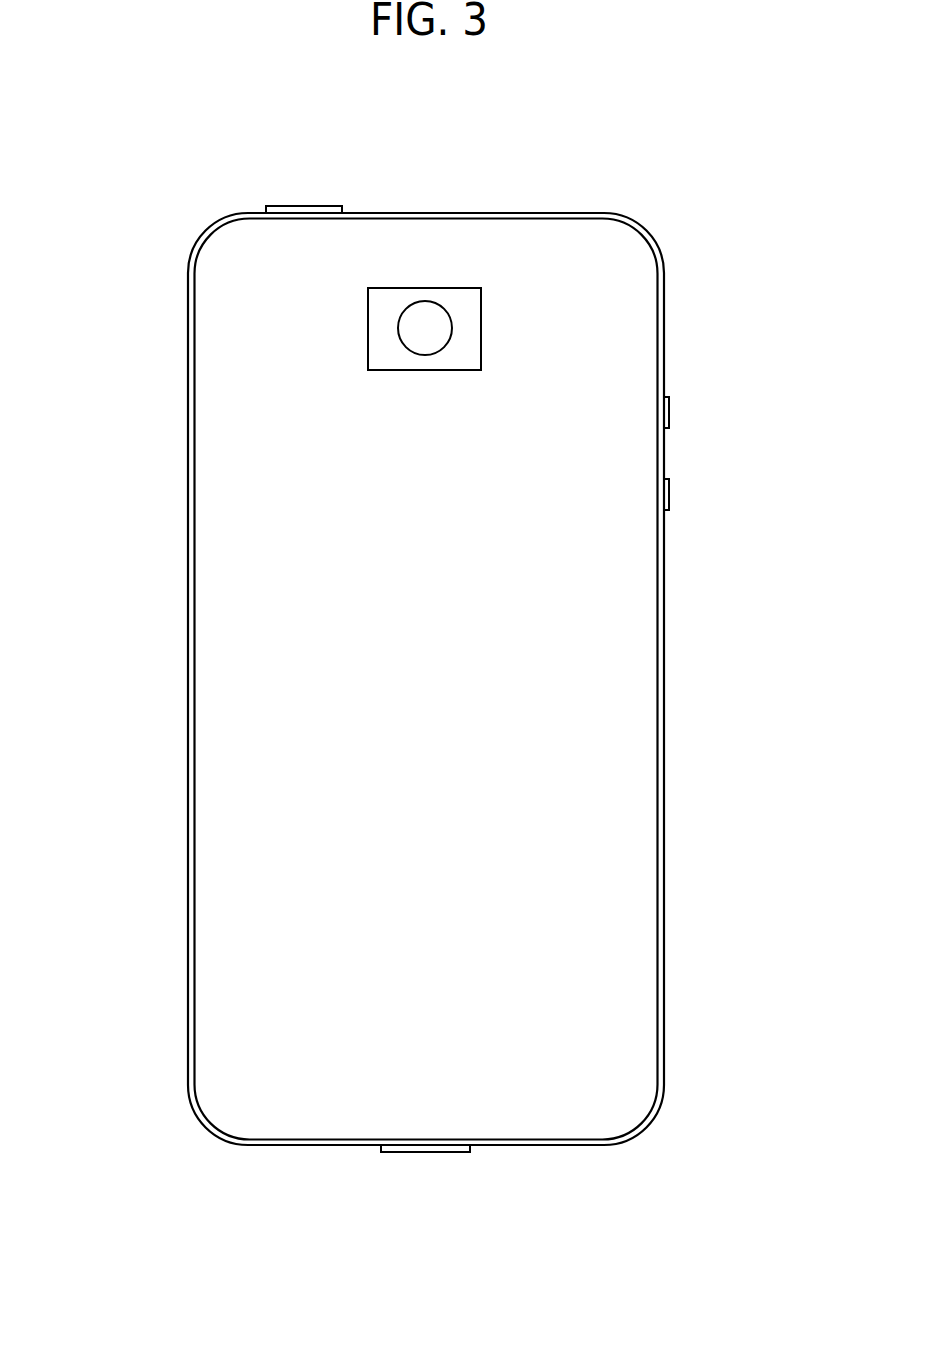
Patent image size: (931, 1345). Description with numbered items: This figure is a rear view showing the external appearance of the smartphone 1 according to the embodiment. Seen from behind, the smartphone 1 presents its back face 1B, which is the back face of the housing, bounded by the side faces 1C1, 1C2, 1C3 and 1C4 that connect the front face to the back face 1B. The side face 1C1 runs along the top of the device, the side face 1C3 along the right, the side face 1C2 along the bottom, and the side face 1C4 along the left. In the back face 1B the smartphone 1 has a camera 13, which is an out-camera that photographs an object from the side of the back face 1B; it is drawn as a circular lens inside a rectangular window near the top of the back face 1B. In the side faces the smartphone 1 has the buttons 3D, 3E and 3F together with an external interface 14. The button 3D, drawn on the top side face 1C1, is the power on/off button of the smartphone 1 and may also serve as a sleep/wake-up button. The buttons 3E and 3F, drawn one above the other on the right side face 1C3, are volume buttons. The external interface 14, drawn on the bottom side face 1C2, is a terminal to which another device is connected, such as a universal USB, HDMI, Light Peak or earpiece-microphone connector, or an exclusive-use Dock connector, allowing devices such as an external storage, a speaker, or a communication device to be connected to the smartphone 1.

The smartphone 1 is at (418, 693).
The back face 1B is at (222, 542).
The side face 1C1 is at (532, 213).
The side face 1C2 is at (545, 1147).
The side face 1C3 is at (664, 780).
The side face 1C4 is at (187, 700).
The button 3D is at (300, 206).
The button 3E is at (669, 412).
The button 3F is at (669, 495).
The camera 13 is at (428, 318).
The external interface 14 is at (421, 1153).